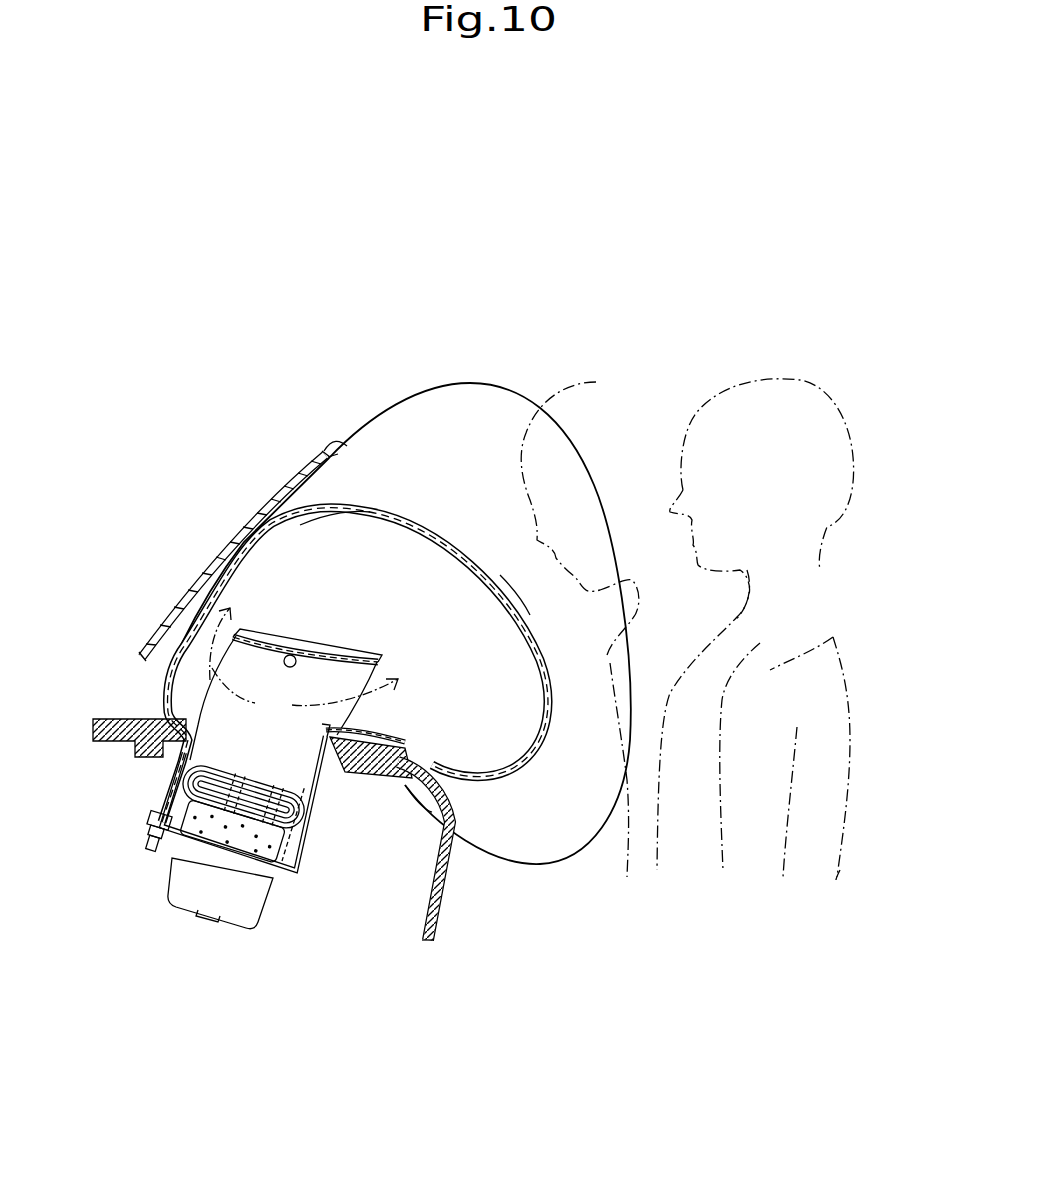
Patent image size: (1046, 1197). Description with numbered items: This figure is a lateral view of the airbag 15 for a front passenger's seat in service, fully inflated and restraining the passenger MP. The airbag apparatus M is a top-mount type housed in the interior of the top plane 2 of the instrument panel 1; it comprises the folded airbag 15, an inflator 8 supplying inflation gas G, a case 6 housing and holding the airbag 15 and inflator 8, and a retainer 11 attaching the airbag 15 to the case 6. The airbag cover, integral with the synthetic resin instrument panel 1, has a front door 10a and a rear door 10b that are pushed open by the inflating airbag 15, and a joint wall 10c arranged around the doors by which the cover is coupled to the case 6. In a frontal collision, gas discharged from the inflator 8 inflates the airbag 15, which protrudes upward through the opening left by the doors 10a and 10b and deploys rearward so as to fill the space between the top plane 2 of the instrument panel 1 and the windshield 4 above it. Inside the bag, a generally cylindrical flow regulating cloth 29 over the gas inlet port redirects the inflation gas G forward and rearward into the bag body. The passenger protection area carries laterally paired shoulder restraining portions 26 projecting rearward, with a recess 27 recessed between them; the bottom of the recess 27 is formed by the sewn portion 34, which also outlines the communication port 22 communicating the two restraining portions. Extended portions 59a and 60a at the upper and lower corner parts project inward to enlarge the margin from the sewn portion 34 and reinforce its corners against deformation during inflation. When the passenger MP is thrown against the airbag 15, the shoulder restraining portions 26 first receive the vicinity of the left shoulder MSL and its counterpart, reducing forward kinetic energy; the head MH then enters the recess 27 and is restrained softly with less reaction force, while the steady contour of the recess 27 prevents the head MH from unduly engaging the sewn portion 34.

The instrument panel 1 is at (432, 925).
The top plane 2 is at (433, 763).
The windshield 4 is at (268, 522).
The case 6 is at (303, 885).
The inflator 8 is at (225, 905).
The front door 10a is at (126, 708).
The rear door 10b is at (385, 757).
The joint wall 10c is at (333, 813).
The retainer 11 is at (157, 820).
The airbag 15 is at (537, 360).
The communication port 22 is at (422, 730).
The shoulder restraining portion 26 is at (300, 520).
The recess 27 is at (355, 610).
The flow regulating cloth 29 is at (325, 640).
The sewn portion 34 is at (520, 613).
The extended portion 59a is at (307, 591).
The extended portion 60a is at (496, 758).
The inflation gas G is at (294, 684).
The airbag apparatus M is at (234, 854).
The head MH is at (598, 385).
The left shoulder MSL is at (607, 660).
The passenger MP is at (846, 872).